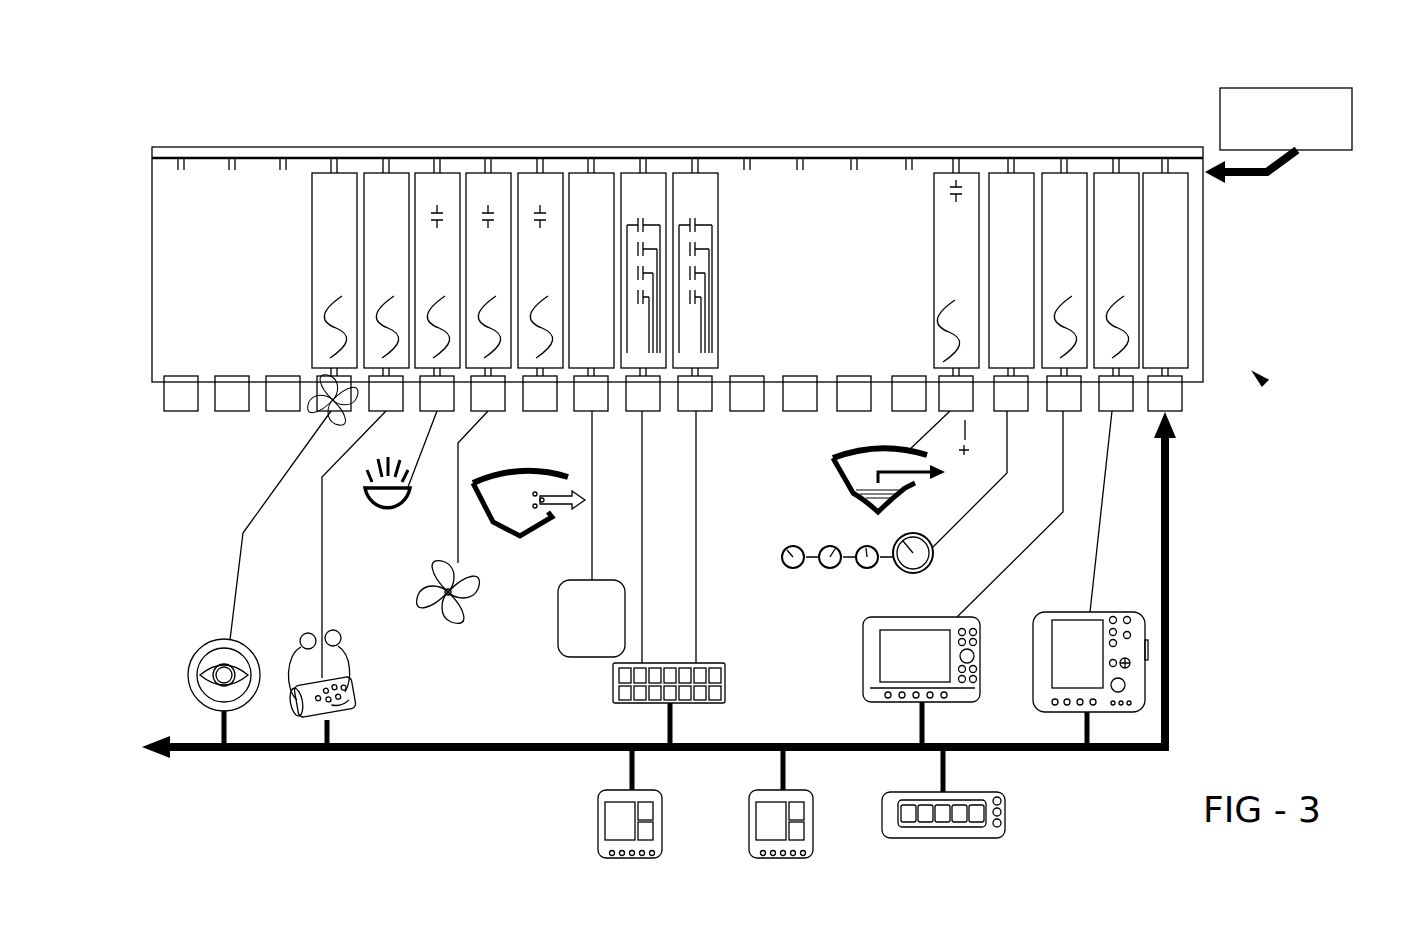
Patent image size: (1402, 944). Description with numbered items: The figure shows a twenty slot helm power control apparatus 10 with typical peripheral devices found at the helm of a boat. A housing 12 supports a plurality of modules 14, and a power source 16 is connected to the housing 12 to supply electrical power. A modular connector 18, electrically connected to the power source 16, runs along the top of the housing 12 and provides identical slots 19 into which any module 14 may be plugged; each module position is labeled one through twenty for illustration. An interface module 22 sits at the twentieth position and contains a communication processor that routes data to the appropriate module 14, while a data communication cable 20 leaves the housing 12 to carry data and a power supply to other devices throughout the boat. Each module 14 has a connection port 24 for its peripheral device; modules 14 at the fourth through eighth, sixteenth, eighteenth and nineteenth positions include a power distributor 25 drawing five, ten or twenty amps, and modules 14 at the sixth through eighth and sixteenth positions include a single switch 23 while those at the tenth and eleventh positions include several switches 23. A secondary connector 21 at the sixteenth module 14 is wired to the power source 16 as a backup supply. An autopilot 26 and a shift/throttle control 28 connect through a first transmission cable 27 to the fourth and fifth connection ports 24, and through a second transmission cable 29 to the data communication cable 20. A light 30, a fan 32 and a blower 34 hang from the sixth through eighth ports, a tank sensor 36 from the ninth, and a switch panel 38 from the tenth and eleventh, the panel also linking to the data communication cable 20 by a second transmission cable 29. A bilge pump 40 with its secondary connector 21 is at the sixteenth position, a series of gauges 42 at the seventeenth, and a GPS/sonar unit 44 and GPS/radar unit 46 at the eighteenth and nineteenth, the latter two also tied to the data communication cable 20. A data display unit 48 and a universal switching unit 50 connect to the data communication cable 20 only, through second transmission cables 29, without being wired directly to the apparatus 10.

The power control apparatus 10 is at (1263, 382).
The housing 12 is at (245, 147).
The modules 14 is at (590, 190).
The power source 16 is at (1290, 95).
The modular connector 18 is at (820, 158).
The slots 19 is at (320, 167).
The data communication cable 20 is at (1172, 697).
The secondary connector 21 is at (972, 444).
The interface module 22 is at (697, 270).
The switch 23 is at (432, 215).
The connection port 24 is at (310, 408).
The power distributor 25 is at (330, 325).
The autopilot 26 is at (202, 665).
The first transmission cable 27 is at (322, 560).
The shift/throttle control 28 is at (346, 700).
The second transmission cable 29 is at (220, 725).
The light 30 is at (370, 503).
The fan 32 is at (470, 613).
The blower 34 is at (518, 472).
The tank sensor 36 is at (577, 643).
The switch panel 38 is at (663, 667).
The bilge pump 40 is at (860, 453).
The gauges 42 is at (893, 570).
The GPS/sonar unit 44 is at (927, 643).
The GPS/radar unit 46 is at (1072, 628).
The data display unit 48 is at (767, 822).
The universal switching unit 50 is at (1007, 832).